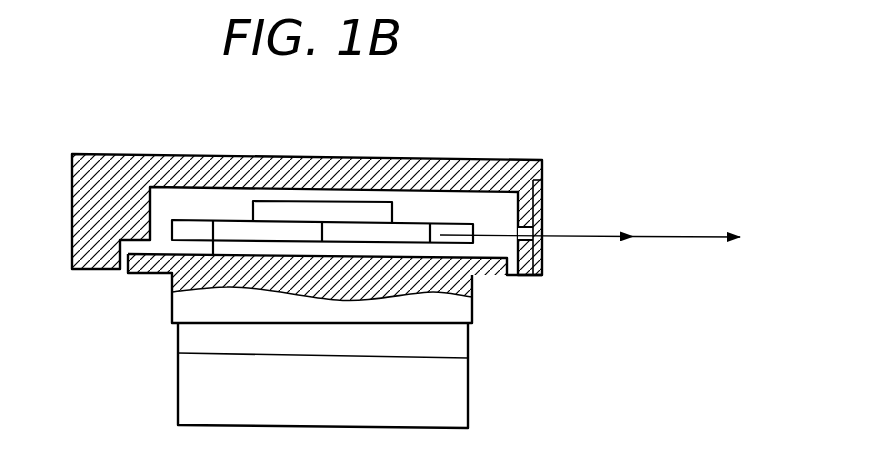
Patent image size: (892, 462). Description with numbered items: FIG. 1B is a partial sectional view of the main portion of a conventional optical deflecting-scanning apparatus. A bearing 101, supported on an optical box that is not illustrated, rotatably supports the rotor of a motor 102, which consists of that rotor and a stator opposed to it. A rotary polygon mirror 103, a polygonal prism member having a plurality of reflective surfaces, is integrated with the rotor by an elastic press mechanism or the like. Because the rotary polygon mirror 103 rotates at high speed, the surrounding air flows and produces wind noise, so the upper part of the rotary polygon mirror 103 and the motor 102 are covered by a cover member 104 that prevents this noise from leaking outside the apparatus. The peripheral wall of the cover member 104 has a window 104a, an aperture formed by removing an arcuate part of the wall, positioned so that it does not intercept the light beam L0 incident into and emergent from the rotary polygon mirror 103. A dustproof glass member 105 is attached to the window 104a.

The bearing 101 is at (468, 388).
The motor 102 is at (492, 310).
The rotary polygon mirror 103 is at (403, 232).
The cover member 104 is at (333, 158).
The window 104a is at (545, 228).
The dustproof glass member 105 is at (543, 268).
The light beam L0 is at (587, 236).